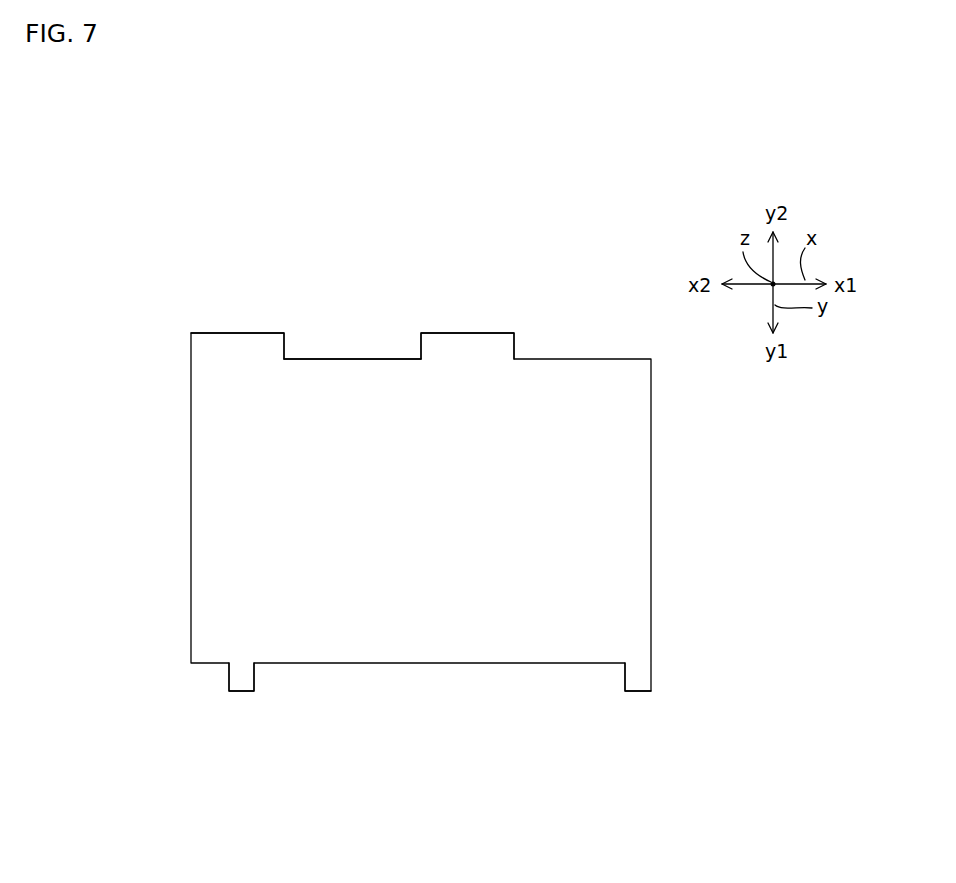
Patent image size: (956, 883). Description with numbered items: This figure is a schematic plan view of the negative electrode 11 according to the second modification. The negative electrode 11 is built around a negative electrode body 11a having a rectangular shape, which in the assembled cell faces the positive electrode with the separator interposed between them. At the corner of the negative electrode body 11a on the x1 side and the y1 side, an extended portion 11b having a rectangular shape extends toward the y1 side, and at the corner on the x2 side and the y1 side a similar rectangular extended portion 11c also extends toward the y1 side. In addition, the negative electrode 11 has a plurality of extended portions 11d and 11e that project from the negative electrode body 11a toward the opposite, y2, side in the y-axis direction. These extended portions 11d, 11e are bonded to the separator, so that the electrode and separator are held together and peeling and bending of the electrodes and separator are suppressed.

The negative electrode 11 is at (567, 289).
The negative electrode body 11a is at (377, 363).
The extended portion 11b is at (637, 676).
The extended portion 11c is at (245, 677).
The extended portion 11d is at (240, 347).
The extended portion 11e is at (457, 349).